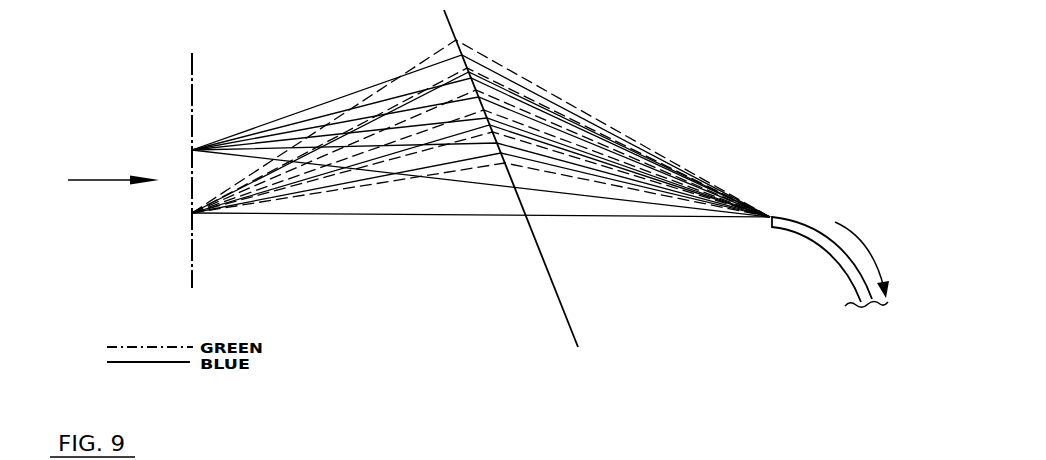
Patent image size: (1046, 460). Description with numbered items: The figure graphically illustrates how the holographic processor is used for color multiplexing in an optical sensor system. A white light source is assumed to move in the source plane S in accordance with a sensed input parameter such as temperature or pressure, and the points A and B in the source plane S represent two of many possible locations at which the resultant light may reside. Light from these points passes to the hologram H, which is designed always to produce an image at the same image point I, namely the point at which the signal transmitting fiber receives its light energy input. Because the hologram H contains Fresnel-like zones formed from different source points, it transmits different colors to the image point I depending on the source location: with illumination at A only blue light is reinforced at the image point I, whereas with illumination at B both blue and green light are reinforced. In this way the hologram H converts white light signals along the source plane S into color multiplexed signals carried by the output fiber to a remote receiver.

The source plane point A is at (468, 136).
The source plane point B is at (468, 131).
The source plane S is at (190, 187).
The hologram H is at (558, 196).
The image point I is at (788, 216).